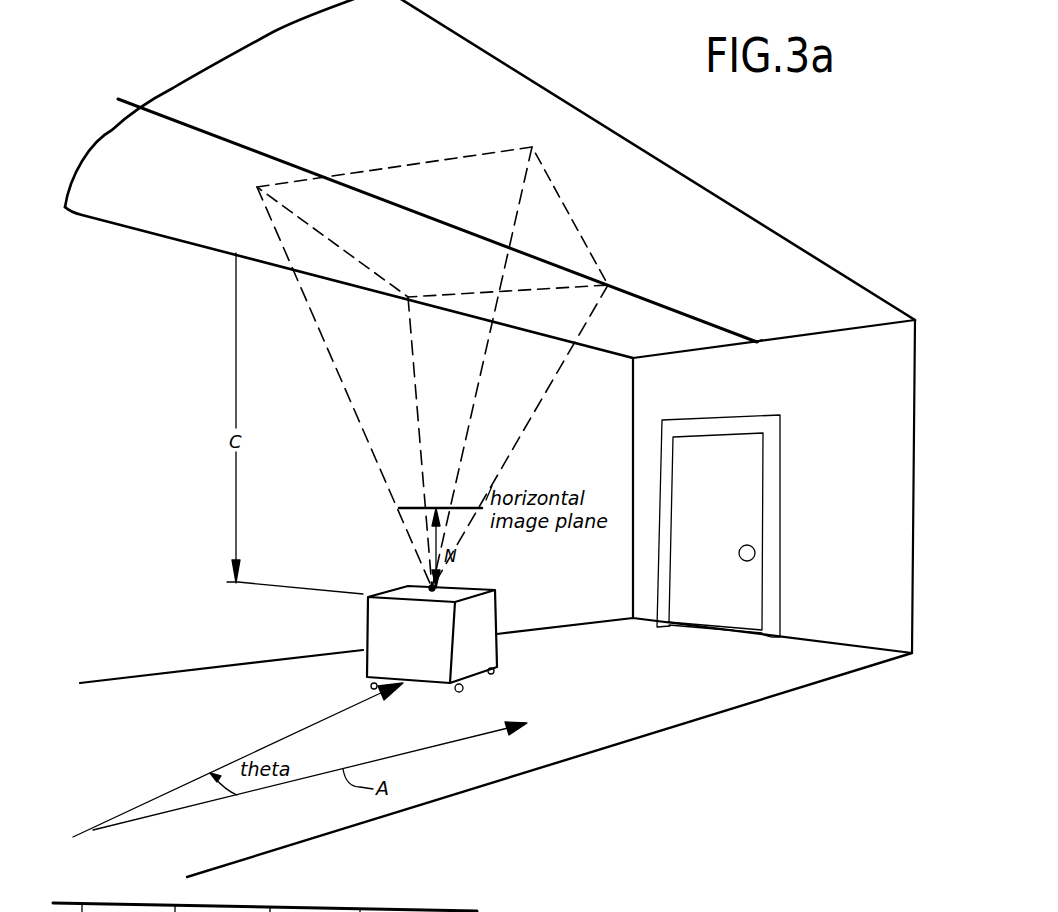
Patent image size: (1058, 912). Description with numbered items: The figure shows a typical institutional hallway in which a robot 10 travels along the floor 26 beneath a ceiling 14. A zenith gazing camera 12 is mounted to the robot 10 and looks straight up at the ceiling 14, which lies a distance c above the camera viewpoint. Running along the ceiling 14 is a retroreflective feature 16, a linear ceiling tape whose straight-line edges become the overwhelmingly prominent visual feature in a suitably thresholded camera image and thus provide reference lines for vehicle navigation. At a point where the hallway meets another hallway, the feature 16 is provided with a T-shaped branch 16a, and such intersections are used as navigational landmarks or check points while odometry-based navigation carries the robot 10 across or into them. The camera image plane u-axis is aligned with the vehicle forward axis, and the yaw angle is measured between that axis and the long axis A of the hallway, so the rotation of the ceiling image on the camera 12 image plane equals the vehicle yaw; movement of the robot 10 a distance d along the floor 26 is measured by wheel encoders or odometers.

The robot 10 is at (500, 656).
The camera 12 is at (430, 583).
The ceiling 14 is at (489, 94).
The retroreflective feature 16 is at (645, 298).
The T-shaped branch 16a is at (760, 342).
The floor 26 is at (665, 716).